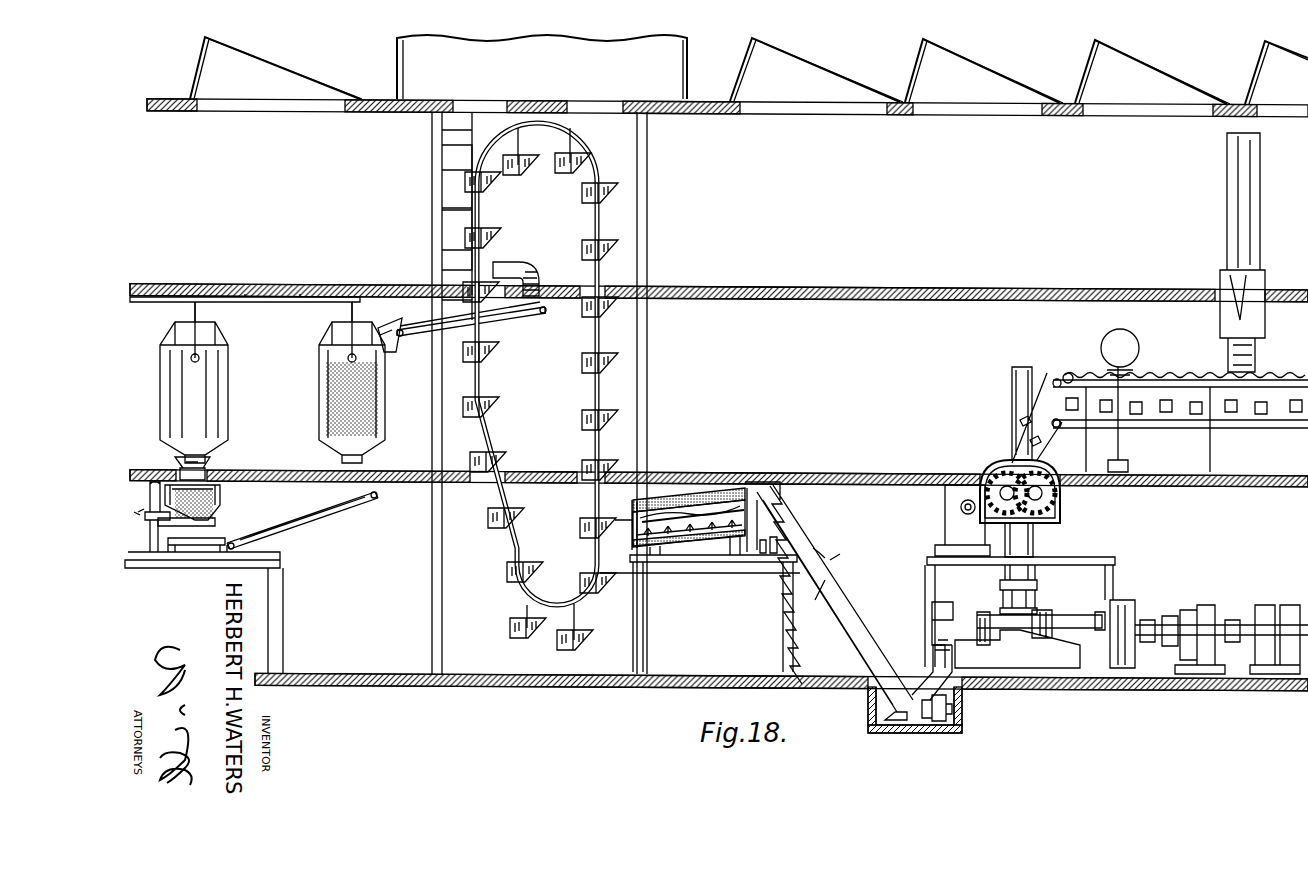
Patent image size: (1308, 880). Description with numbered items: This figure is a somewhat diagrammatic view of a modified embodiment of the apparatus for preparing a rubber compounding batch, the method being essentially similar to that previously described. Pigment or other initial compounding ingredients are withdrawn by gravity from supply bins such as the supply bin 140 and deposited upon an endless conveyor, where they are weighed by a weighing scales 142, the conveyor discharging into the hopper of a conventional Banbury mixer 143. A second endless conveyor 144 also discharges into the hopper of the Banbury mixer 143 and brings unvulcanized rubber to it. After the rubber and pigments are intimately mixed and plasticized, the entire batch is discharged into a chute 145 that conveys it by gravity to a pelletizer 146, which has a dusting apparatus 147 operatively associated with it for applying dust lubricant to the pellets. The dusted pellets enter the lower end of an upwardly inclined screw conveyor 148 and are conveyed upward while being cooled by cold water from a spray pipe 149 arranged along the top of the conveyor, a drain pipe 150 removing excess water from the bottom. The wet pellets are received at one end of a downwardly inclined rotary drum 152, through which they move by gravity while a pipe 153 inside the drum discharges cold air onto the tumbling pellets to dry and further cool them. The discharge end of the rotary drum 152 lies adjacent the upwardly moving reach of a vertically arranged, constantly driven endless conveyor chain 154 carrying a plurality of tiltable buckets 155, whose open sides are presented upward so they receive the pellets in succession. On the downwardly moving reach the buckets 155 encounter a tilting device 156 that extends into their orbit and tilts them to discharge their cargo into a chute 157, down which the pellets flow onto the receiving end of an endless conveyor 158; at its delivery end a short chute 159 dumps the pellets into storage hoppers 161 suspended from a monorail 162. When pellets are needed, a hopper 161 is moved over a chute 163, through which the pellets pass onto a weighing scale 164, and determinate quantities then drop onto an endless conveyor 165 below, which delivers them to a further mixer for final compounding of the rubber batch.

The supply bin 140 is at (1227, 190).
The weighing scales 142 is at (1108, 342).
The Banbury mixer 143 is at (989, 464).
The second endless conveyor 144 is at (1282, 412).
The chute 145 is at (1038, 541).
The pelletizer 146 is at (1080, 617).
The dusting apparatus 147 is at (940, 660).
The screw conveyor 148 is at (824, 595).
The spray pipe 149 is at (831, 572).
The drain pipe 150 is at (875, 712).
The rotary drum 152 is at (700, 490).
The pipe 153 is at (645, 515).
The endless conveyor chain 154 is at (594, 382).
The tiltable buckets 155 is at (562, 203).
The tilting device 156 is at (472, 202).
The chute 157 is at (522, 272).
The endless conveyor 158 is at (517, 314).
The short chute 159 is at (396, 338).
The hoppers 161 is at (225, 410).
The monorail 162 is at (252, 297).
The chute 163 is at (213, 464).
The weighing scale 164 is at (215, 517).
The endless conveyor 165 is at (325, 508).